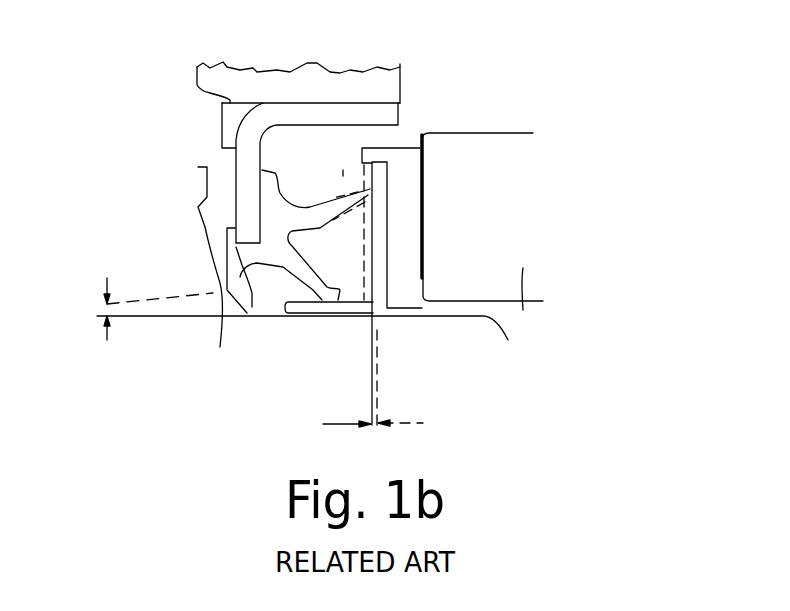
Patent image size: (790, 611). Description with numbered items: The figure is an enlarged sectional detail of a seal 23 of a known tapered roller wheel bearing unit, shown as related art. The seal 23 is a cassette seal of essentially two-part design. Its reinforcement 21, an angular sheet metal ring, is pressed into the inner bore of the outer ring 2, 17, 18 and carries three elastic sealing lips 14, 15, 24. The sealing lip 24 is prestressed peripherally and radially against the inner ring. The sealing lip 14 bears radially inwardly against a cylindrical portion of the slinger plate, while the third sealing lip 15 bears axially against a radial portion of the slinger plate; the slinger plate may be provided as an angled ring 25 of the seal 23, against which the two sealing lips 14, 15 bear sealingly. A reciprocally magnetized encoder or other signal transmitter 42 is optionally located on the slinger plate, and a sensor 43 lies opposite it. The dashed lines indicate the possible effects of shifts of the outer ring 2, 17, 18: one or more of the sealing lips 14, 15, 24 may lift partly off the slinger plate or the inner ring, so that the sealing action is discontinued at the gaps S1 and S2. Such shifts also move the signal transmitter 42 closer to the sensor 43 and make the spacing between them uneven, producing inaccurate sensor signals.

The outer ring 2 is at (318, 76).
The outer ring 17 is at (318, 76).
The outer ring 18 is at (360, 80).
The reinforcement 21 is at (300, 117).
The seal 23 is at (423, 90).
The sealing lip 15 is at (348, 154).
The sealing lip 24 is at (247, 312).
The sealing lip 14 is at (320, 307).
The signal transmitter 42 is at (397, 178).
The angled ring 25 is at (384, 285).
The sensor 43 is at (325, 307).
The gap S1 is at (108, 306).
The gap S2 is at (395, 384).